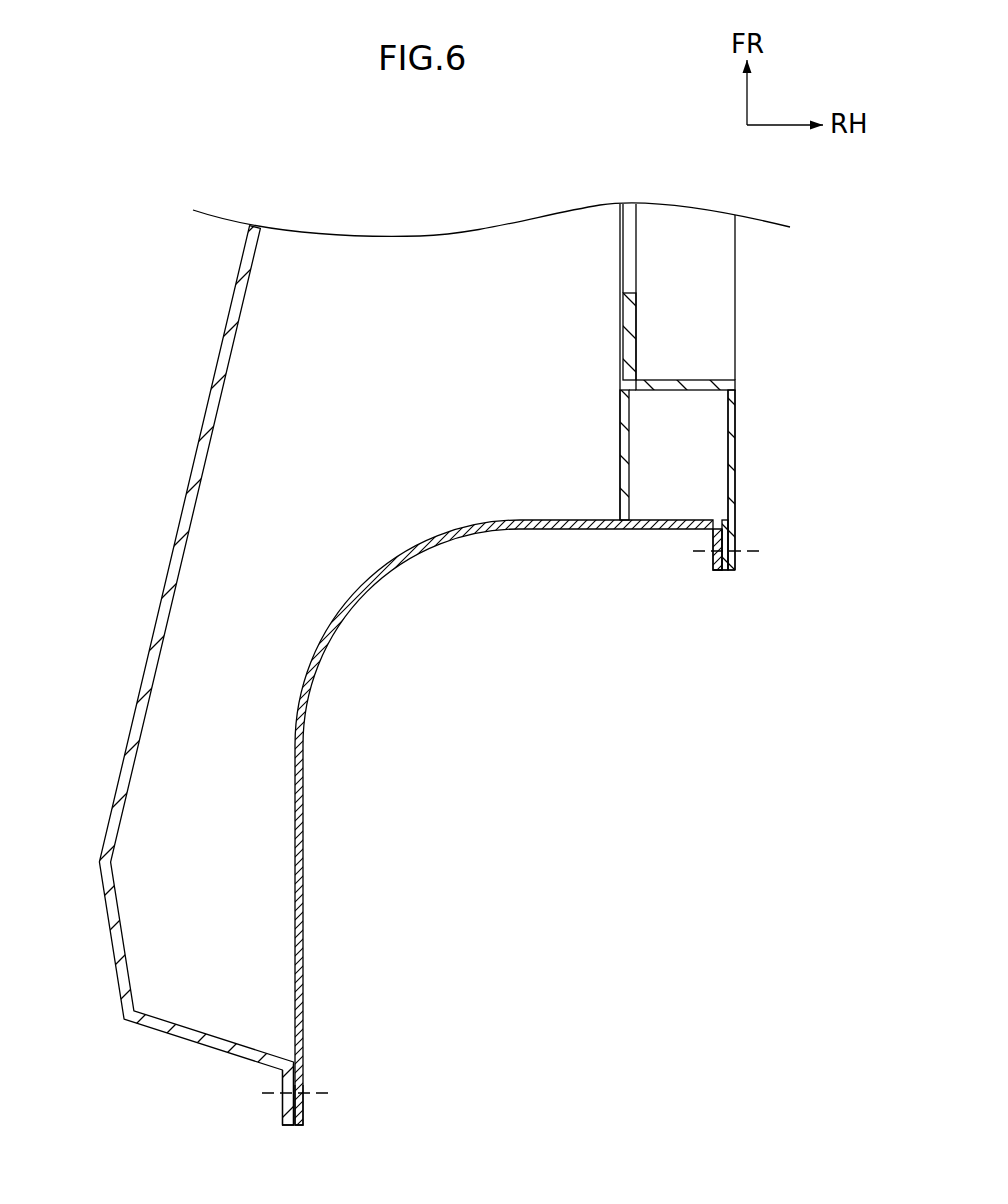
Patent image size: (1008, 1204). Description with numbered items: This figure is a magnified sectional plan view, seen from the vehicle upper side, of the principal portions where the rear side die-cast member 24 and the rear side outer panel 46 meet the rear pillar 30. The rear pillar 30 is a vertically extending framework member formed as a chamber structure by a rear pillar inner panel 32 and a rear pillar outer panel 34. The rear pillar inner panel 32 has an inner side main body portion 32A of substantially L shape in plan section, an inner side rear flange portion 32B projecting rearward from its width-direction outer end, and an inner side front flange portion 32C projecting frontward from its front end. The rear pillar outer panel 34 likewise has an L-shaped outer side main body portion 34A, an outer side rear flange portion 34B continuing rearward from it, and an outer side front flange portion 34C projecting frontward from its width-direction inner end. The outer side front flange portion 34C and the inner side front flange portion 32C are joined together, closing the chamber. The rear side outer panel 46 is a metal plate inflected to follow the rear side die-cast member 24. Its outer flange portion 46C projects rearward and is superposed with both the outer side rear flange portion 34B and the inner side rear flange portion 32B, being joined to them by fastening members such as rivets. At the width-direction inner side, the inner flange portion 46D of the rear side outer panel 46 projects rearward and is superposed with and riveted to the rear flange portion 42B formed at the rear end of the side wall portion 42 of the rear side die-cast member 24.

The rear side die-cast member 24 is at (150, 567).
The rear pillar 30 is at (757, 317).
The rear pillar inner panel 32 is at (618, 475).
The inner side main body portion 32A is at (620, 432).
The inner side rear flange portion 32B is at (720, 572).
The inner side front flange portion 32C is at (620, 326).
The rear pillar outer panel 34 is at (737, 455).
The outer side main body portion 34A is at (735, 422).
The outer side rear flange portion 34B is at (737, 555).
The outer side front flange portion 34C is at (637, 317).
The side wall portion 42 is at (187, 497).
The rear flange portion 42B is at (285, 1108).
The rear side outer panel 46 is at (303, 805).
The outer flange portion 46C is at (713, 557).
The inner flange portion 46D is at (303, 1083).